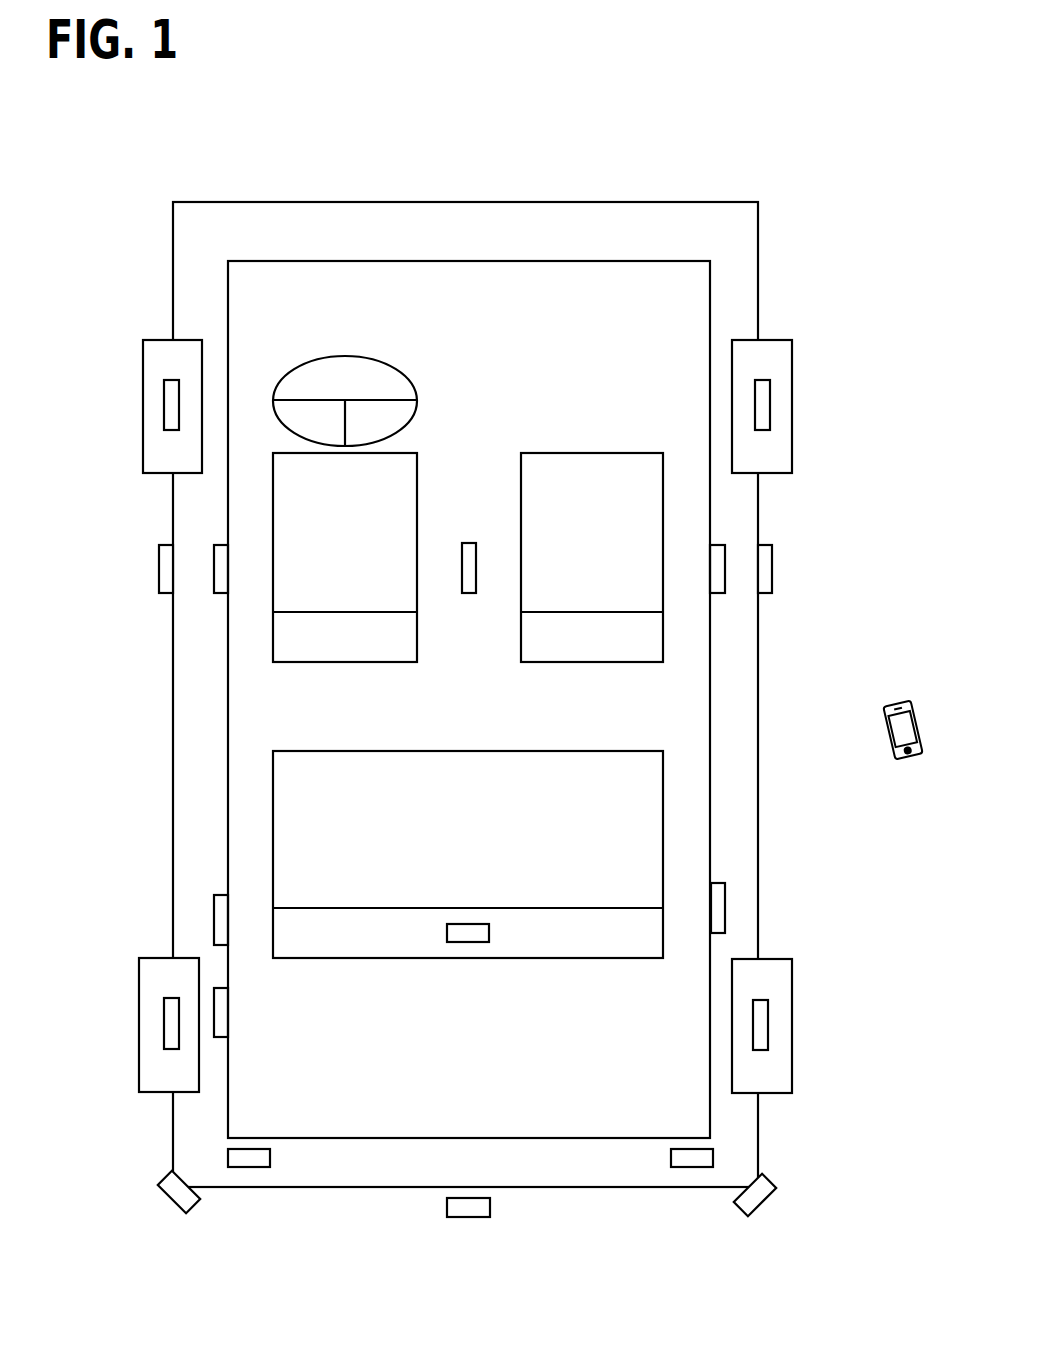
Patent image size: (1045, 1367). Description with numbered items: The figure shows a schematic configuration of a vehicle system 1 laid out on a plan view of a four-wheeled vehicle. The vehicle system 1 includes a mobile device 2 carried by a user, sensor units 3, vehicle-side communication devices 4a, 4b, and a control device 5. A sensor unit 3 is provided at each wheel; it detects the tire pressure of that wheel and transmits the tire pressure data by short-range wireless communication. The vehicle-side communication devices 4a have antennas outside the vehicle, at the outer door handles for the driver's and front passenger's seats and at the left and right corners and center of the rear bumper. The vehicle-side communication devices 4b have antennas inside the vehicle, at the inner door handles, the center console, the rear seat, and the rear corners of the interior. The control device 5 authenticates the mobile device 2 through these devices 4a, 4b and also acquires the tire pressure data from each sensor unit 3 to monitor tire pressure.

The vehicle system 1 is at (861, 249).
The mobile device 2 is at (897, 703).
The sensor unit 3 is at (164, 405).
The vehicle-side communication device 4a is at (159, 567).
The vehicle-side communication device 4b is at (222, 593).
The control device 5 is at (228, 1022).